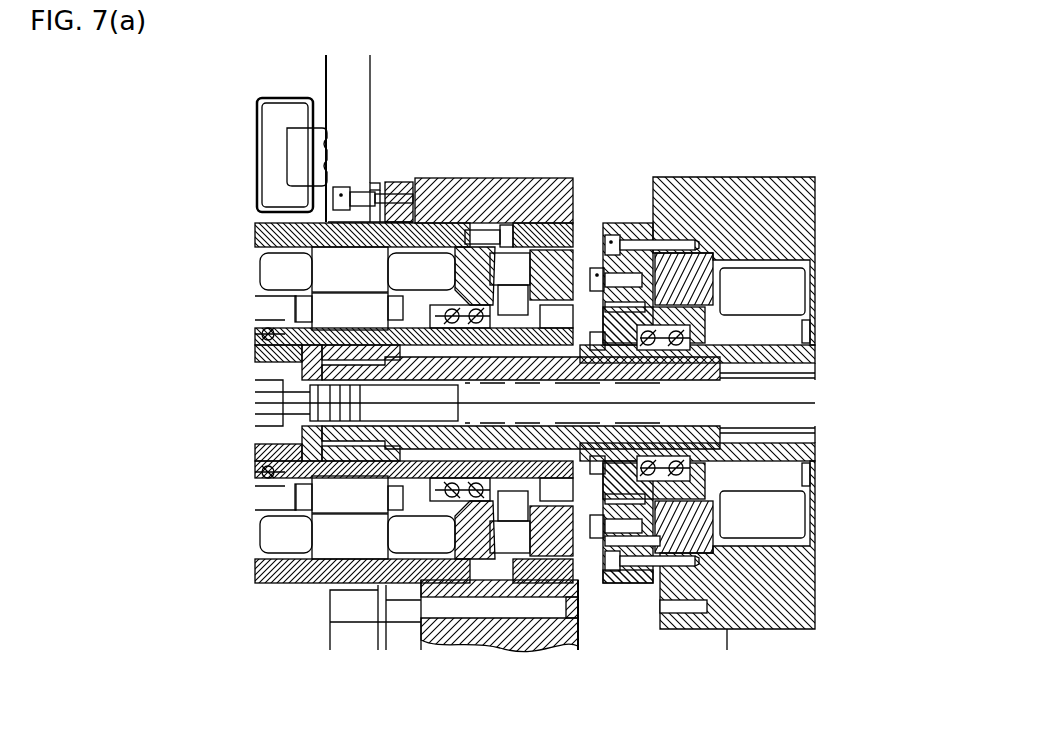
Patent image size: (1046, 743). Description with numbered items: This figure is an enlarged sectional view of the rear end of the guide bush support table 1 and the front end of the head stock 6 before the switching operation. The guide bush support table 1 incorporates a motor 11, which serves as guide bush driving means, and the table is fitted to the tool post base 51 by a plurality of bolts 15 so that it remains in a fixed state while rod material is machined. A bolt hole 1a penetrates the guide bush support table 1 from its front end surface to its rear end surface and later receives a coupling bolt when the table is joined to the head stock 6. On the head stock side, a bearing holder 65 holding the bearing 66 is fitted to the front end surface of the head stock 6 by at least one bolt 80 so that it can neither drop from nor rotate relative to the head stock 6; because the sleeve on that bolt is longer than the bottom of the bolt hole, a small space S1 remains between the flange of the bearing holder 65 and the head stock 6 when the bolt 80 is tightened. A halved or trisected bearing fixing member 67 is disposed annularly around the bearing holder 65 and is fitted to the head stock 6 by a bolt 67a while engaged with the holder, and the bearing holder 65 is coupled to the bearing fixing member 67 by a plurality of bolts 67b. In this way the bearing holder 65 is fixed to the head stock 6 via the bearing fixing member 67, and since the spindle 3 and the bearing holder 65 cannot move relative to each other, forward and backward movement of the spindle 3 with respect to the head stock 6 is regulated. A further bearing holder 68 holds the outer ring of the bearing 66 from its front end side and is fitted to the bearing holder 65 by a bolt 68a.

The tool post base 51 is at (350, 97).
The bolt 15 is at (375, 185).
The guide bush support table 1 is at (530, 172).
The motor 11 is at (428, 240).
The bearing holder 68 is at (597, 300).
The bearing fixing member 67 is at (613, 225).
The bolt 67b is at (636, 262).
The bearing holder 65 is at (683, 340).
The bearing 66 is at (703, 305).
The spindle 3 is at (767, 322).
The head stock 6 is at (823, 214).
The space S1 is at (655, 508).
The bolt 80 is at (718, 548).
The bolt 67a is at (703, 560).
The bolt 68a is at (598, 505).
The bolt hole 1a is at (457, 620).